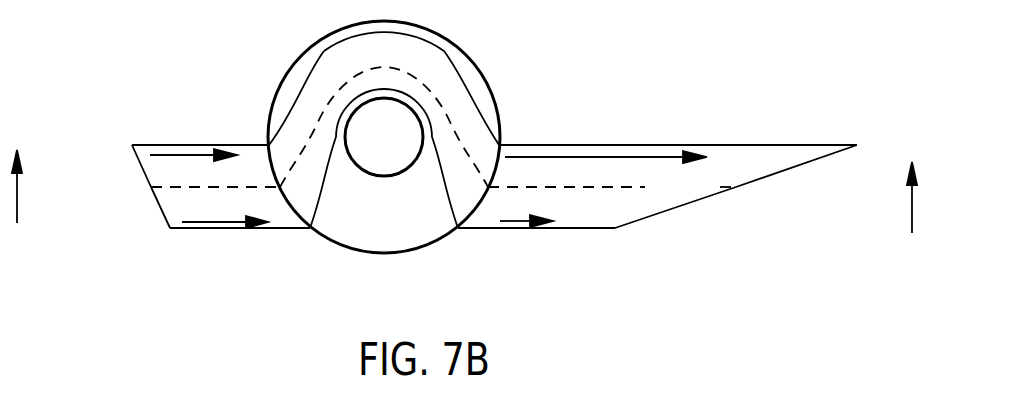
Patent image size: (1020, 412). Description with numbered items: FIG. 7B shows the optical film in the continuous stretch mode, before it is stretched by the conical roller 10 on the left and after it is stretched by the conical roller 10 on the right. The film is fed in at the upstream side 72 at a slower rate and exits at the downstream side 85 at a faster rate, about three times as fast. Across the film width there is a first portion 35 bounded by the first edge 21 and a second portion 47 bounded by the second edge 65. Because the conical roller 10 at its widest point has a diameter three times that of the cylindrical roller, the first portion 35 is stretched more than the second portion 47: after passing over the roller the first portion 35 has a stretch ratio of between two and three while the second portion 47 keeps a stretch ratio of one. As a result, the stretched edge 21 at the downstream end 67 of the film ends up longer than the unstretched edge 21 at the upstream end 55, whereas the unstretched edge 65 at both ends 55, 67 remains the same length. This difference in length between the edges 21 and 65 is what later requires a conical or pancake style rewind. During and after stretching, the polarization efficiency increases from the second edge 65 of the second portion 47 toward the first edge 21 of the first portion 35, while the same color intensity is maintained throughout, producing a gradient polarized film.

The conical roller 10 is at (413, 208).
The first edge 21 is at (164, 145).
The first portion 35 is at (148, 160).
The second portion 47 is at (170, 208).
The end 55 is at (152, 188).
The second edge 65 is at (208, 230).
The end 67 is at (737, 188).
The upstream side 72 is at (16, 201).
The downstream side 85 is at (910, 212).